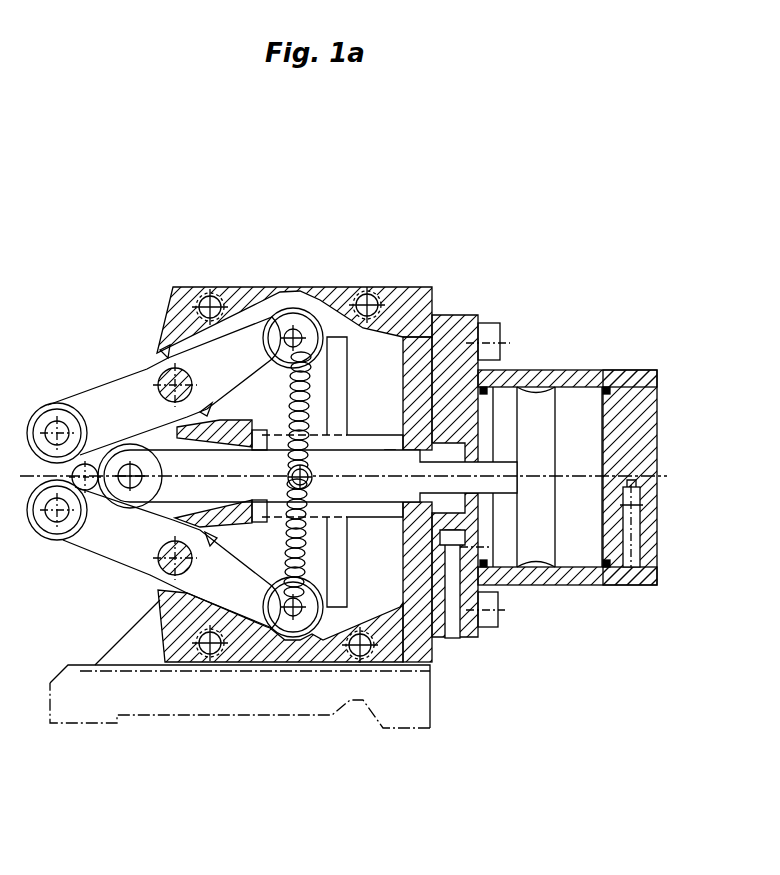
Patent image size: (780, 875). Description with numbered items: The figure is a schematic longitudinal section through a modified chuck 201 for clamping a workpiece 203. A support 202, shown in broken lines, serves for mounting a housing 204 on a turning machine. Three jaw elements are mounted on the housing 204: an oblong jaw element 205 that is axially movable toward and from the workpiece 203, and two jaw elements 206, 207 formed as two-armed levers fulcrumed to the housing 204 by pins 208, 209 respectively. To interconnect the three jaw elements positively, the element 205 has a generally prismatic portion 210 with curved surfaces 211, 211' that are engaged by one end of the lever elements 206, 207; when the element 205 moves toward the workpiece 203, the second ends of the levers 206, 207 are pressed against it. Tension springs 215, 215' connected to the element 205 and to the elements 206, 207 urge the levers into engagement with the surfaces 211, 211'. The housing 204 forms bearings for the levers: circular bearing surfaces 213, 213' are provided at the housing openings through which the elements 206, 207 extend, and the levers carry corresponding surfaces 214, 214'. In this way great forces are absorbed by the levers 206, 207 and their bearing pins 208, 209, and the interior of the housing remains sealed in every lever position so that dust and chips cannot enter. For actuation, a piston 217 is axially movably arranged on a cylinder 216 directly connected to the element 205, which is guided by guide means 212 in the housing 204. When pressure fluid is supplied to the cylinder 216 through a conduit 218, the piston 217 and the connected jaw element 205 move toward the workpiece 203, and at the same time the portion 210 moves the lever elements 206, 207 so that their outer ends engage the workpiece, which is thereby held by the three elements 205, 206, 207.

The chuck 201 is at (112, 204).
The support 202 is at (95, 697).
The workpiece 203 is at (88, 482).
The housing 204 is at (400, 325).
The jaw element 205 is at (368, 488).
The jaw element 206 is at (123, 542).
The jaw element 207 is at (105, 407).
The pin 208 is at (177, 583).
The pin 209 is at (163, 372).
The prismatic portion 210 is at (333, 592).
The curved surface 211 is at (293, 678).
The curved surface 211' is at (271, 365).
The guide means 212 is at (404, 462).
The circular bearing surface 213 is at (221, 525).
The circular bearing surface 213' is at (213, 337).
The surface 214 is at (233, 563).
The surface 214' is at (241, 320).
The tension spring 215 is at (339, 538).
The tension spring 215' is at (323, 356).
The cylinder 216 is at (587, 370).
The piston 217 is at (533, 542).
The conduit 218 is at (628, 557).